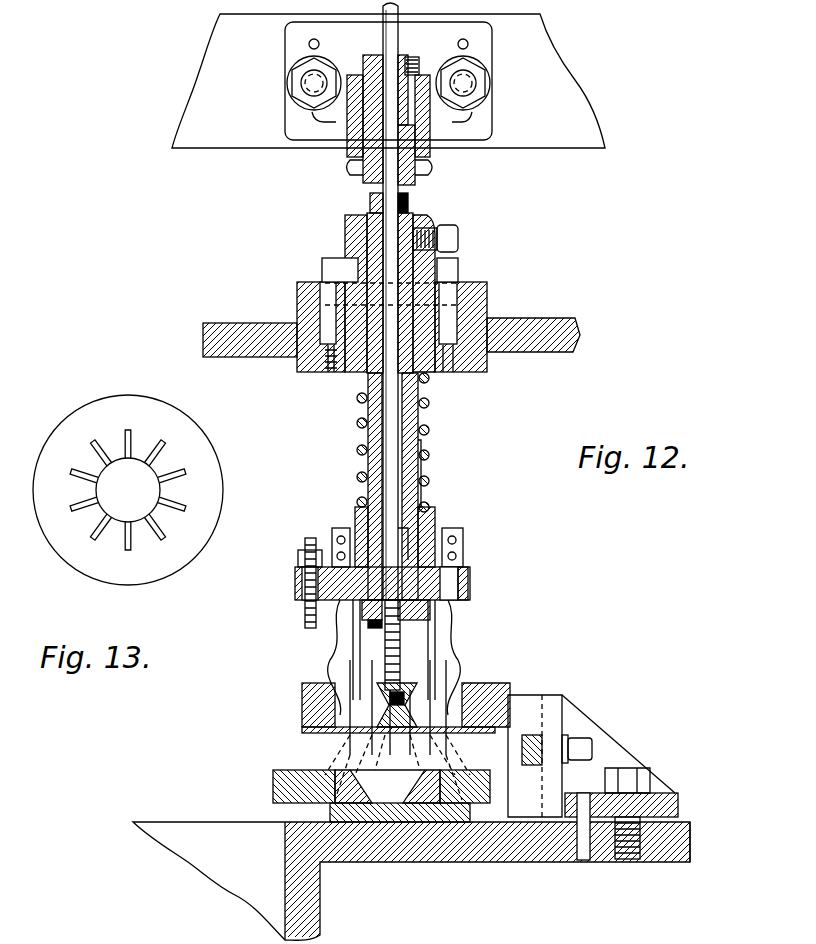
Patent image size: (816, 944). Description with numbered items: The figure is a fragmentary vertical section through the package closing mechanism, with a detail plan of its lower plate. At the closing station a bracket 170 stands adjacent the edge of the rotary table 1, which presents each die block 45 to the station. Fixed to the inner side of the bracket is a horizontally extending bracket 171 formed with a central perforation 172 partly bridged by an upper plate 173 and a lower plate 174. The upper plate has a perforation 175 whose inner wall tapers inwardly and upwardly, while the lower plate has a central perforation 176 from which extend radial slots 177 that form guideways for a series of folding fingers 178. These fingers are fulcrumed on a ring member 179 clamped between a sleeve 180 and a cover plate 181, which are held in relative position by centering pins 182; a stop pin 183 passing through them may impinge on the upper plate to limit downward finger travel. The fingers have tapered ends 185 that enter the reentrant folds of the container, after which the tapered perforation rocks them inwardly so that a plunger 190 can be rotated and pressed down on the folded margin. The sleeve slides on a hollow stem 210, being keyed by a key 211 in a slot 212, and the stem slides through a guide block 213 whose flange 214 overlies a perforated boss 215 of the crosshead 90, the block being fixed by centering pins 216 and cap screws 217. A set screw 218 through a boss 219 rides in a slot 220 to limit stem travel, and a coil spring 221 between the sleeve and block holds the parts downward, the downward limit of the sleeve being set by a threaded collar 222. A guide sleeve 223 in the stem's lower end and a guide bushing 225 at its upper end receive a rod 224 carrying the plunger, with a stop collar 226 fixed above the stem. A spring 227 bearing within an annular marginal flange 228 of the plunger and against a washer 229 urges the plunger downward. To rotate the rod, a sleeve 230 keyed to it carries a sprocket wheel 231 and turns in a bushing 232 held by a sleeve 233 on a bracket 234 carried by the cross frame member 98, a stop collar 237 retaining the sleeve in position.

In FIG. 12, the rotary table 1 is at (272, 790).
In FIG. 12, the die block 45 is at (355, 818).
In FIG. 12, the crosshead 90 is at (220, 330).
In FIG. 12, the cross frame member 98 is at (388, 81).
In FIG. 12, the bracket 170 is at (675, 795).
In FIG. 12, the horizontally extending bracket 171 is at (540, 700).
In FIG. 12, the central perforation 172 is at (500, 690).
In FIG. 12, the upper plate 173 is at (300, 692).
In FIG. 12, the lower plate 174 is at (305, 733).
In FIG. 13, the lower plate 174 is at (200, 490).
In FIG. 12, the perforation 175 is at (465, 672).
In FIG. 13, the central perforation 176 is at (128, 490).
In FIG. 13, the radial slots 177 is at (158, 448).
In FIG. 12, the folding fingers 178 is at (440, 650).
In FIG. 12, the ring member 179 is at (458, 582).
In FIG. 12, the sleeve 180 is at (463, 530).
In FIG. 12, the cover plate 181 is at (300, 597).
In FIG. 12, the centering pins 182 is at (470, 580).
In FIG. 12, the stop pin 183 is at (304, 553).
In FIG. 12, the tapered ends 185 is at (345, 748).
In FIG. 12, the plunger 190 is at (470, 732).
In FIG. 12, the hollow stem 210 is at (418, 415).
In FIG. 12, the key 211 is at (432, 512).
In FIG. 12, the slot 212 is at (421, 470).
In FIG. 12, the guide block 213 is at (458, 285).
In FIG. 12, the flange 214 is at (470, 296).
In FIG. 12, the perforated boss 215 is at (565, 318).
In FIG. 12, the centering pins 216 is at (440, 290).
In FIG. 12, the cap screws 217 is at (324, 270).
In FIG. 12, the set screw 218 is at (458, 246).
In FIG. 12, the boss 219 is at (437, 236).
In FIG. 12, the slot 220 is at (415, 225).
In FIG. 12, the coil spring 221 is at (357, 422).
In FIG. 12, the collar 222 is at (366, 622).
In FIG. 12, the guide sleeve 223 is at (432, 610).
In FIG. 12, the rod 224 is at (410, 535).
In FIG. 12, the guide bushing 225 is at (410, 215).
In FIG. 12, the stop collar 226 is at (368, 201).
In FIG. 12, the spring 227 is at (350, 650).
In FIG. 12, the annular marginal flange 228 is at (375, 705).
In FIG. 12, the washer 229 is at (438, 628).
In FIG. 12, the sleeve 230 is at (350, 72).
In FIG. 12, the sprocket wheel 231 is at (348, 167).
In FIG. 12, the bushing 232 is at (430, 76).
In FIG. 12, the sleeve 233 is at (470, 130).
In FIG. 12, the bracket 234 is at (478, 116).
In FIG. 12, the stop collar 237 is at (420, 45).